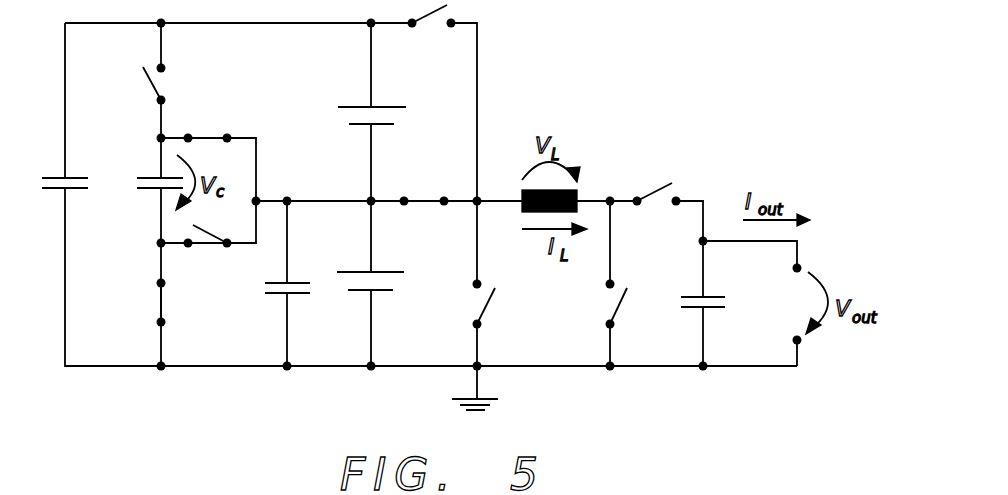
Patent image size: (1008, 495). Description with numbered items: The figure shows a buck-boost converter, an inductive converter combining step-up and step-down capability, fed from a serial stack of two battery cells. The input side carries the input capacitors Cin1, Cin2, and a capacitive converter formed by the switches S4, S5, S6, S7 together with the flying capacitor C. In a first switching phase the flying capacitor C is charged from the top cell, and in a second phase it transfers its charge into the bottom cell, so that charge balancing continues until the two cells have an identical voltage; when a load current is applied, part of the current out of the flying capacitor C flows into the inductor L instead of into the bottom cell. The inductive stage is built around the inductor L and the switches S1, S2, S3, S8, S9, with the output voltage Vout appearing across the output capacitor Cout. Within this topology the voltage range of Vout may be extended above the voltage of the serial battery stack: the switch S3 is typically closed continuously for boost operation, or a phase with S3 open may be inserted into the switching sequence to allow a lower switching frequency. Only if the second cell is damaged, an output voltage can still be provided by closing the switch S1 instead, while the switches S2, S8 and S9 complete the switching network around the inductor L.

The switch S1 is at (414, 216).
The switch S2 is at (496, 308).
The switch S3 is at (429, 29).
The switch S4 is at (136, 85).
The switch S5 is at (207, 124).
The switch S6 is at (208, 246).
The switch S7 is at (139, 302).
The switch S8 is at (654, 207).
The switch S9 is at (628, 310).
The flying capacitor C is at (156, 173).
The input capacitor Cin1 is at (297, 307).
The input capacitor Cin2 is at (75, 201).
The output capacitor Cout is at (718, 321).
The inductor L is at (540, 218).